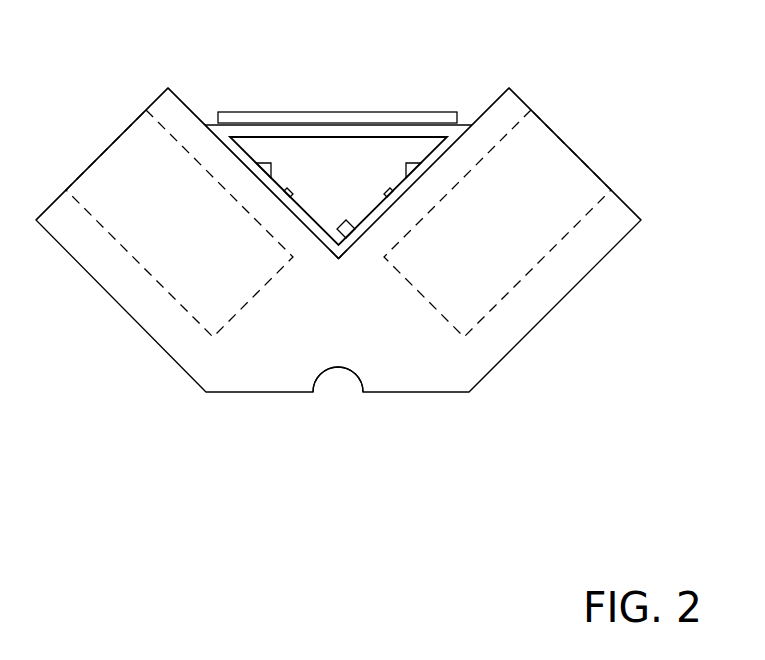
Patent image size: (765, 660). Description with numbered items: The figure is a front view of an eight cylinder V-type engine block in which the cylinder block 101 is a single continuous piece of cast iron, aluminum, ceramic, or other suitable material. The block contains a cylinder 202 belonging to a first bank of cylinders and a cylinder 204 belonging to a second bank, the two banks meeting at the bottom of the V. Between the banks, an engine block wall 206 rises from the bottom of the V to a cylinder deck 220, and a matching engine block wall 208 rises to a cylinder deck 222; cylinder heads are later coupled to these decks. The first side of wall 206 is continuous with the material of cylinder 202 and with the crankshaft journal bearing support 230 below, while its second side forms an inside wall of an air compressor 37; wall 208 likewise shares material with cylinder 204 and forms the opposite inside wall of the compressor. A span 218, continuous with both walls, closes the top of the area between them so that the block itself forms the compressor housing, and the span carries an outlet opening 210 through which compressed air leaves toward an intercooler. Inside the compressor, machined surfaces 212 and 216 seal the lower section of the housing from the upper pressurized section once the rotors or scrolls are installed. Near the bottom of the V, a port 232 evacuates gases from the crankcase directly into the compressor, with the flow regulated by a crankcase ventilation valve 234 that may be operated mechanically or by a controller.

The cylinder block 101 is at (509, 352).
The cylinder deck 220 is at (137, 118).
The cylinder deck 222 is at (559, 138).
The engine block wall 206 is at (190, 110).
The engine block wall 208 is at (491, 105).
The outlet opening 210 is at (338, 112).
The span 218 is at (308, 137).
The air compressor 37 is at (344, 181).
The machined surface 212 is at (300, 153).
The machined surface 216 is at (408, 165).
The crankcase ventilation valve 234 is at (343, 222).
The port 232 is at (351, 239).
The cylinder 202 is at (233, 313).
The cylinder 204 is at (443, 318).
The crankshaft journal bearing support 230 is at (354, 376).